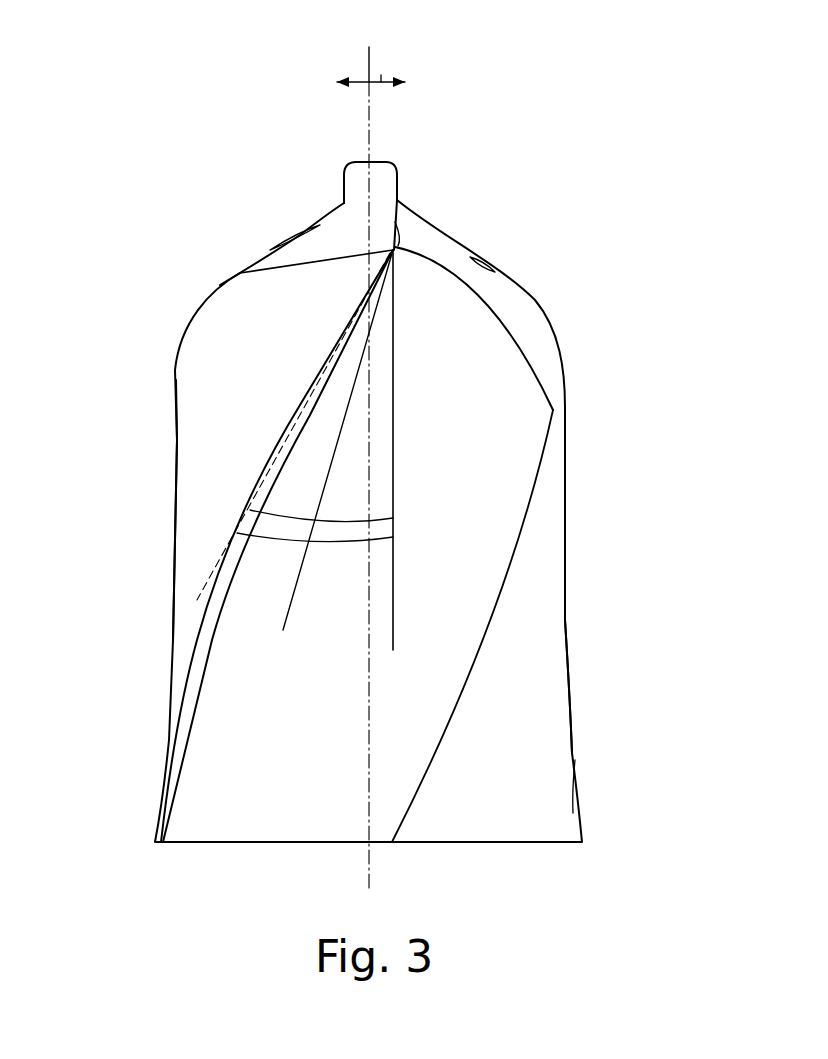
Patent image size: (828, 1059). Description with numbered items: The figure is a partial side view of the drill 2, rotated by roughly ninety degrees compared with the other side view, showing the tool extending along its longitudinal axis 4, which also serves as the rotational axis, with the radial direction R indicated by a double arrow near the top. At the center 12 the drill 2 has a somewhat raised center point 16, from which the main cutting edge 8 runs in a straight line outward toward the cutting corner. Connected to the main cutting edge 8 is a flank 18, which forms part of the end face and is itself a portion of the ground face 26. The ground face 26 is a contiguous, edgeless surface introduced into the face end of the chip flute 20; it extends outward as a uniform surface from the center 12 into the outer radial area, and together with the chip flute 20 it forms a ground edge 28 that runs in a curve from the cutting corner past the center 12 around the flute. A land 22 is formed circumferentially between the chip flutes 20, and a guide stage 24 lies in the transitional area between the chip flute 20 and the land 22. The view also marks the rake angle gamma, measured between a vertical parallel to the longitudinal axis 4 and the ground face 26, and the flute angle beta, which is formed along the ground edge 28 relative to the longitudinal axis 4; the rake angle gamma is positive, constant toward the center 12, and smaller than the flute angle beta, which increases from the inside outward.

The drill 2 is at (563, 108).
The longitudinal axis 4 is at (367, 62).
The radial direction R is at (382, 77).
The main cutting edge 8 is at (403, 242).
The center 12 is at (356, 146).
The center point 16 is at (381, 175).
The flank 18 is at (345, 215).
The chip flute 20 is at (228, 673).
The land 22 is at (205, 522).
The guide stage 24 is at (217, 612).
The ground face 26 is at (518, 310).
The ground edge 28 is at (503, 337).
The rake angle gamma is at (337, 518).
The flute angle beta is at (347, 540).